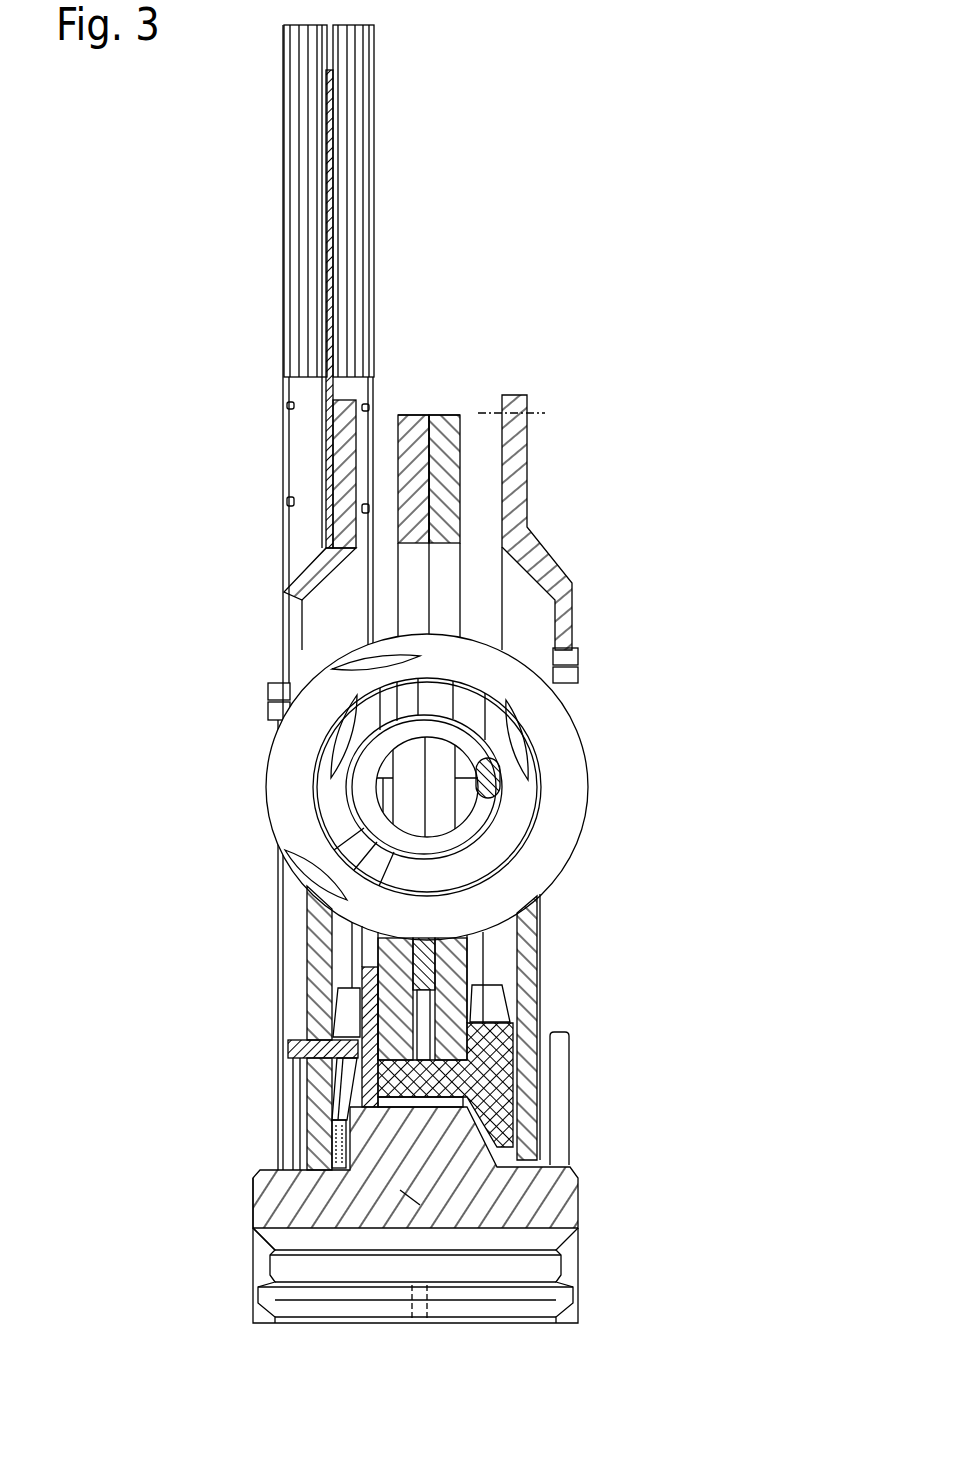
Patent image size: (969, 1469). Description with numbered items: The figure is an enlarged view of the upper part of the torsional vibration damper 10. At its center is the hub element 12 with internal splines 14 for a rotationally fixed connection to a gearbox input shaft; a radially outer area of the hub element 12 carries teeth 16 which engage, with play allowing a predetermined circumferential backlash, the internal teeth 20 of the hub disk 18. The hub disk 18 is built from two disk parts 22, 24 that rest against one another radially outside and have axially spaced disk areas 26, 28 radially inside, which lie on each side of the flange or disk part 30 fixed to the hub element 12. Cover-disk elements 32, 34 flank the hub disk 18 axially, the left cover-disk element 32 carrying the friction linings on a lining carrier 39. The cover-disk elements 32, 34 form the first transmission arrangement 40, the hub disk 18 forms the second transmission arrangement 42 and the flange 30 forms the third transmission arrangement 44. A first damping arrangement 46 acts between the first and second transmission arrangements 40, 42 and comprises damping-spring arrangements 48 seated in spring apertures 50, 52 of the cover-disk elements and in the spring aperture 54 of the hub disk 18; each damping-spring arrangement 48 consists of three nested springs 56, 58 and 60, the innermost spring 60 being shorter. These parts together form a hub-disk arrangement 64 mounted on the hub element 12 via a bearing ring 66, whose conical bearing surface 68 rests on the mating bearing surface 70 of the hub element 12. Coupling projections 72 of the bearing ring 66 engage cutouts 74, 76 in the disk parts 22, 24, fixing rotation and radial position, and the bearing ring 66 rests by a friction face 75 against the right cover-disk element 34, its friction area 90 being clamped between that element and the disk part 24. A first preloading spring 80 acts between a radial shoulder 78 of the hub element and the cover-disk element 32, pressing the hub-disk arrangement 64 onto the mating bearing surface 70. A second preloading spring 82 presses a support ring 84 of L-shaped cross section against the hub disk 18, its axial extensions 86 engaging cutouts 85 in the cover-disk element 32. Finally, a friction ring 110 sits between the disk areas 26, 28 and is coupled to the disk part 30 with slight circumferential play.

The torsional vibration damper 10 is at (651, 696).
The hub element 12 is at (584, 1245).
The internal splines 14 is at (480, 1305).
The teeth 16 is at (522, 1100).
The hub disk 18 is at (440, 402).
The internal teeth 20 is at (269, 1209).
The disk part 22 is at (418, 415).
The disk part 24 is at (452, 415).
The disk area 26 is at (355, 960).
The disk area 28 is at (487, 957).
The flange or disk part 30 is at (482, 1012).
The cover-disk element 32 is at (347, 463).
The cover-disk element 34 is at (527, 520).
The lining carrier 39 is at (320, 388).
The first transmission arrangement 40 is at (222, 403).
The second transmission arrangement 42 is at (468, 488).
The third transmission arrangement 44 is at (482, 985).
The first damping arrangement 46 is at (594, 785).
The damping-spring arrangement 48 is at (551, 832).
The spring aperture 50 is at (290, 886).
The spring aperture 52 is at (548, 900).
The spring aperture 54 is at (545, 592).
The spring 56 is at (368, 650).
The spring 58 is at (352, 700).
The innermost spring 60 is at (478, 770).
The hub-disk arrangement 64 is at (226, 454).
The bearing ring 66 is at (440, 1175).
The bearing surface 68 is at (460, 1165).
The mating bearing surface 70 is at (530, 1118).
The coupling projections 72 is at (339, 1062).
The cutout 74 is at (286, 1025).
The friction face 75 is at (525, 1143).
The cutout 76 is at (520, 1033).
The radial shoulder 78 is at (327, 1141).
The first preloading spring 80 is at (260, 1175).
The second preloading spring 82 is at (327, 1087).
The support ring 84 is at (330, 945).
The cutouts 85 is at (297, 1025).
The axial extensions 86 is at (290, 1047).
The friction area 90 is at (264, 1242).
The friction ring 110 is at (500, 965).